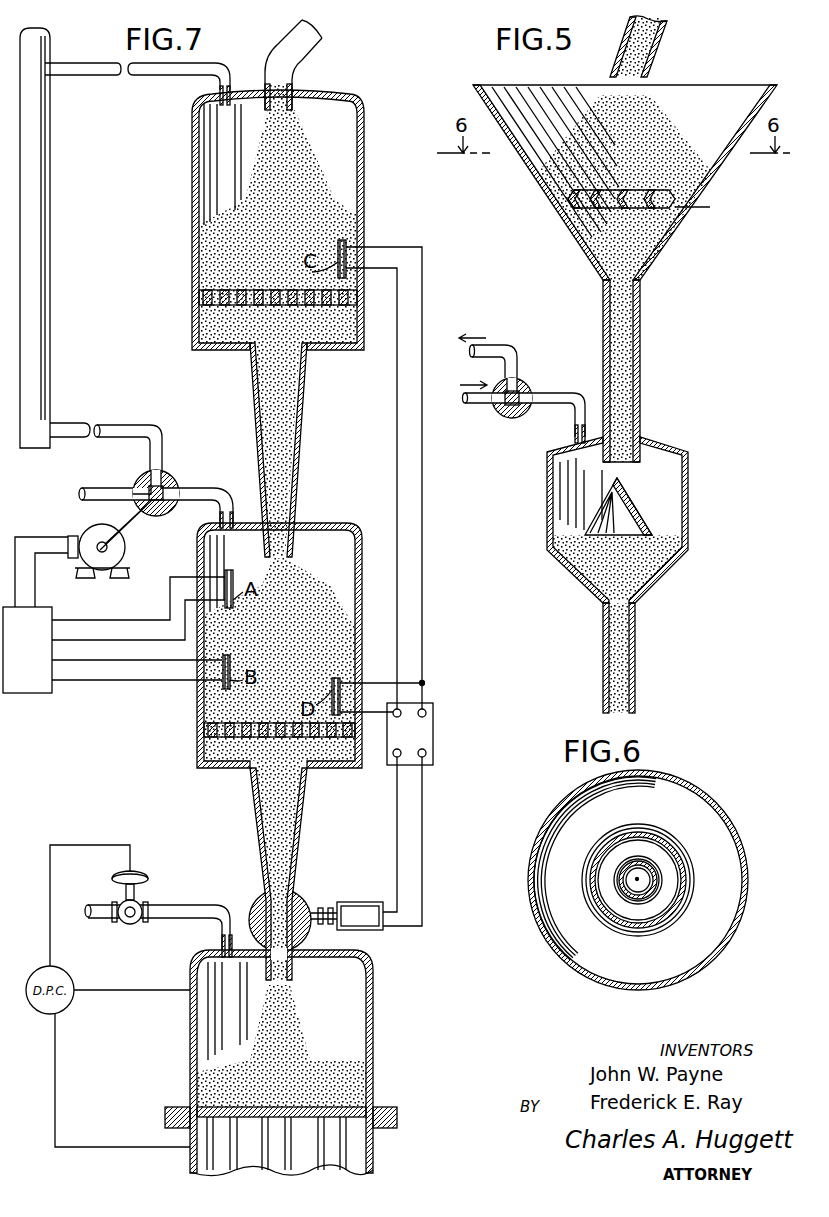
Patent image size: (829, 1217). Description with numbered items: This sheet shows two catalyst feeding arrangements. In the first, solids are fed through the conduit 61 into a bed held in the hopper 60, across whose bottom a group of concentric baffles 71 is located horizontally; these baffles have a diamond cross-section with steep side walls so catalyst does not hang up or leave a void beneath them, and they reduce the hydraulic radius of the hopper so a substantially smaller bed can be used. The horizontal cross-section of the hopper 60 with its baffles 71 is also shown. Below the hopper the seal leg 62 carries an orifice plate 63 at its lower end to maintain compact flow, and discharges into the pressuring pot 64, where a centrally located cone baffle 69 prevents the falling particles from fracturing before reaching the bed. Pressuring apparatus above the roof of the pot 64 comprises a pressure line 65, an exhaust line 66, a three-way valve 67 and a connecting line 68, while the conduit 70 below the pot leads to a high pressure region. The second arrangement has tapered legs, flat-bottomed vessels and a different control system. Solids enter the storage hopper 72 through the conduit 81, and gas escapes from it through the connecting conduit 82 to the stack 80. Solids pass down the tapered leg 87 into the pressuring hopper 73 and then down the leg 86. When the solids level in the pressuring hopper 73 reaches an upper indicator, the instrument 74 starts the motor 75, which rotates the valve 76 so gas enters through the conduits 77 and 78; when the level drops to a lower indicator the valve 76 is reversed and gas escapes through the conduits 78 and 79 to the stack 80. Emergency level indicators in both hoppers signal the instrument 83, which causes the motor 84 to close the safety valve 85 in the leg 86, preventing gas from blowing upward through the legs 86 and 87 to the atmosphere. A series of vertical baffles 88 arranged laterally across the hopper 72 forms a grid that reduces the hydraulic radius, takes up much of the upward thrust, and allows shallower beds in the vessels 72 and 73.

In FIG. 5, the hopper 60 is at (548, 186).
In FIG. 6, the hopper 60 is at (718, 806).
In FIG. 5, the conduit 61 is at (650, 60).
In FIG. 5, the seal leg 62 is at (640, 390).
In FIG. 5, the orifice plate 63 is at (632, 467).
In FIG. 5, the pressuring pot 64 is at (688, 520).
In FIG. 5, the pressure line 65 is at (475, 404).
In FIG. 5, the exhaust line 66 is at (514, 344).
In FIG. 5, the three-way valve 67 is at (517, 372).
In FIG. 5, the connecting line 68 is at (545, 405).
In FIG. 5, the cone baffle 69 is at (640, 507).
In FIG. 5, the conduit 70 is at (637, 668).
In FIG. 5, the concentric baffles 71 is at (648, 212).
In FIG. 6, the concentric baffles 71 is at (690, 853).
In FIG. 7, the storage hopper 72 is at (364, 217).
In FIG. 7, the pressuring hopper 73 is at (360, 550).
In FIG. 7, the instrument 74 is at (40, 695).
In FIG. 7, the motor 75 is at (86, 527).
In FIG. 7, the valve 76 is at (172, 480).
In FIG. 7, the conduit 77 is at (112, 465).
In FIG. 7, the conduit 78 is at (207, 490).
In FIG. 7, the conduit 79 is at (128, 420).
In FIG. 7, the stack 80 is at (47, 262).
In FIG. 7, the conduit 81 is at (310, 47).
In FIG. 7, the connecting conduit 82 is at (97, 62).
In FIG. 7, the instrument 83 is at (433, 748).
In FIG. 7, the motor 84 is at (371, 882).
In FIG. 7, the safety valve 85 is at (254, 900).
In FIG. 7, the leg 86 is at (300, 862).
In FIG. 7, the leg 87 is at (297, 490).
In FIG. 7, the vertical baffles 88 is at (247, 296).